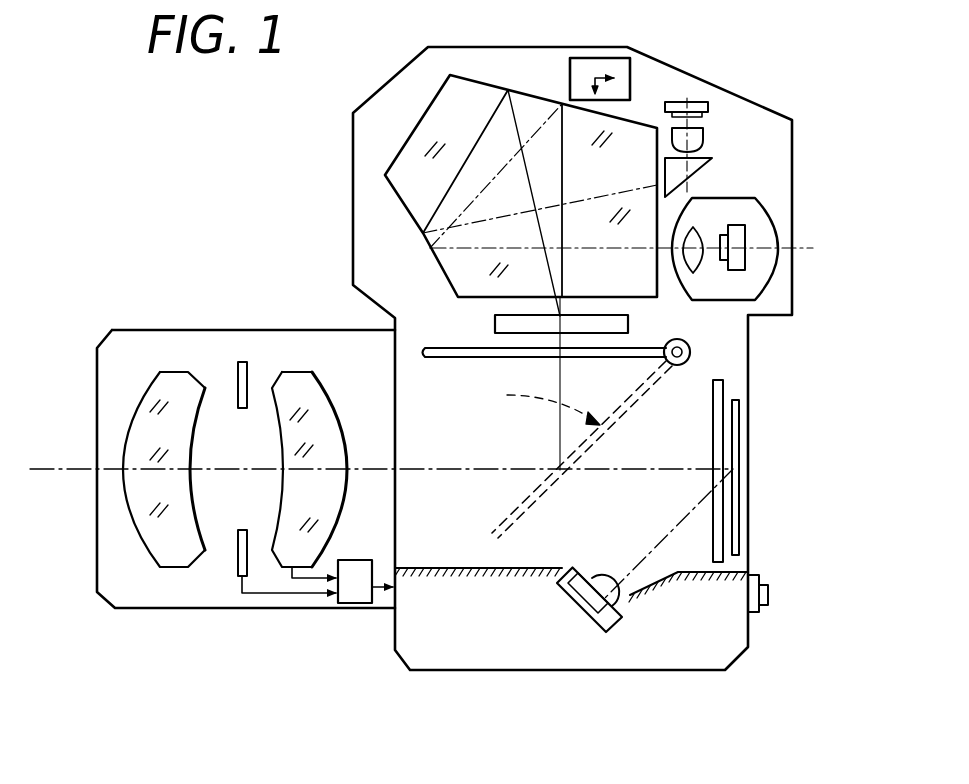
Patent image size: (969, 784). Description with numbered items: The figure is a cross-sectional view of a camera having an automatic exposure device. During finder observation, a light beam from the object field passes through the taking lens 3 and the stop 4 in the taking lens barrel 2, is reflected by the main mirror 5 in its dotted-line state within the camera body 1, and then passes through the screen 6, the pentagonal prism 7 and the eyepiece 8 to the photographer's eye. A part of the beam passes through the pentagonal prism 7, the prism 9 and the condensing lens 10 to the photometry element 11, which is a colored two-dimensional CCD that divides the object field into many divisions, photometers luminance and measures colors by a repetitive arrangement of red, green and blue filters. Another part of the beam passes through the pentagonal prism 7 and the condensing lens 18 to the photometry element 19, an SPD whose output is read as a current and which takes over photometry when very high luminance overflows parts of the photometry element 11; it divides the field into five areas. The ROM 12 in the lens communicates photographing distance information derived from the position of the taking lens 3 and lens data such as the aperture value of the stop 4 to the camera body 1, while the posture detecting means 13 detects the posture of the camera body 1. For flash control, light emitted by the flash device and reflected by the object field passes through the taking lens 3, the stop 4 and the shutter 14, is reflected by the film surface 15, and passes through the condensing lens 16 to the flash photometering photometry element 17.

The camera body 1 is at (493, 662).
The taking lens barrel 2 is at (160, 600).
The taking lens 3 is at (290, 372).
The stop 4 is at (235, 565).
The main mirror 5 is at (525, 360).
The screen 6 is at (495, 325).
The pentagonal prism 7 is at (402, 200).
The eyepiece 8 is at (753, 212).
The prism 9 is at (712, 172).
The condensing lens 10 is at (707, 137).
The photometry element 11 is at (700, 102).
The ROM 12 is at (355, 597).
The posture detecting means 13 is at (588, 62).
The shutter 14 is at (725, 383).
The film surface 15 is at (740, 513).
The condensing lens 16 is at (628, 595).
The photometry element 17 is at (595, 630).
The condensing lens 18 is at (705, 278).
The photometry element 19 is at (740, 240).